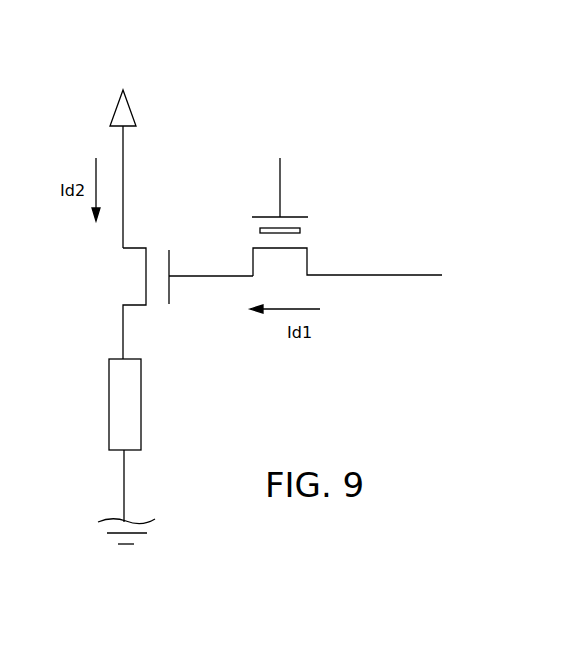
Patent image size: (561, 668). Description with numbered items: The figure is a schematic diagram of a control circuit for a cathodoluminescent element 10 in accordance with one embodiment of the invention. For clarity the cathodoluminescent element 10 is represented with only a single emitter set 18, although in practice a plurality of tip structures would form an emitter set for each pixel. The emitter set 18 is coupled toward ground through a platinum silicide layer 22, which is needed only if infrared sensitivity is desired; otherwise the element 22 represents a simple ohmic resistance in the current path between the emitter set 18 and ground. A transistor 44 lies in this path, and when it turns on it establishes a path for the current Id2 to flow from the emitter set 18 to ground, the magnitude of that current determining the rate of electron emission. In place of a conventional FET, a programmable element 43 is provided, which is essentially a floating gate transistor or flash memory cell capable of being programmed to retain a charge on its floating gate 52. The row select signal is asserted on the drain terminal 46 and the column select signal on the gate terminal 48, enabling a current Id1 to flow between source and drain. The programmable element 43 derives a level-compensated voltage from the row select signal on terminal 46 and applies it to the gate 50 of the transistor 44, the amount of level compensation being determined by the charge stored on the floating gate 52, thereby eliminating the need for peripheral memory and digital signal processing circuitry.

The cathodoluminescent element 10 is at (337, 86).
The emitter set 18 is at (120, 105).
The platinum silicide layer 22 is at (109, 409).
The programmable element 43 is at (316, 223).
The transistor 44 is at (152, 242).
The drain terminal 46 is at (420, 275).
The gate terminal 48 is at (278, 175).
The gate terminal 50 is at (181, 277).
The floating gate 52 is at (260, 228).